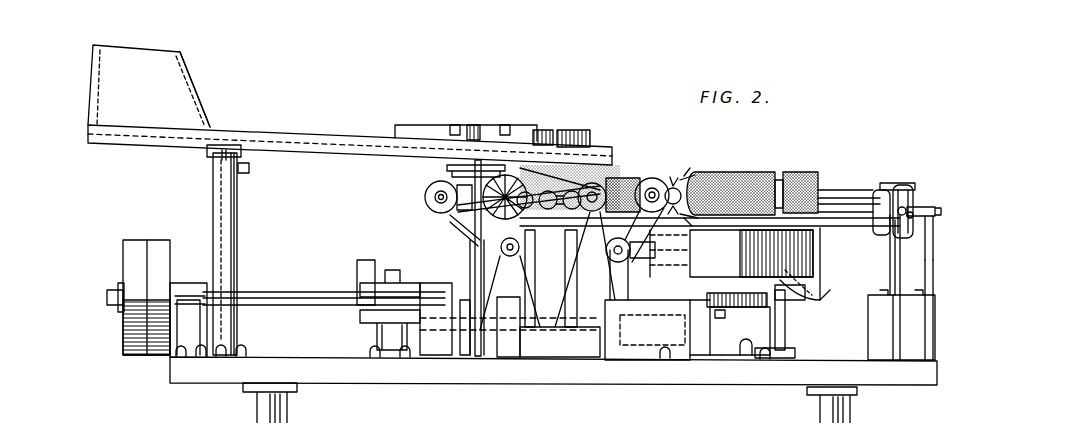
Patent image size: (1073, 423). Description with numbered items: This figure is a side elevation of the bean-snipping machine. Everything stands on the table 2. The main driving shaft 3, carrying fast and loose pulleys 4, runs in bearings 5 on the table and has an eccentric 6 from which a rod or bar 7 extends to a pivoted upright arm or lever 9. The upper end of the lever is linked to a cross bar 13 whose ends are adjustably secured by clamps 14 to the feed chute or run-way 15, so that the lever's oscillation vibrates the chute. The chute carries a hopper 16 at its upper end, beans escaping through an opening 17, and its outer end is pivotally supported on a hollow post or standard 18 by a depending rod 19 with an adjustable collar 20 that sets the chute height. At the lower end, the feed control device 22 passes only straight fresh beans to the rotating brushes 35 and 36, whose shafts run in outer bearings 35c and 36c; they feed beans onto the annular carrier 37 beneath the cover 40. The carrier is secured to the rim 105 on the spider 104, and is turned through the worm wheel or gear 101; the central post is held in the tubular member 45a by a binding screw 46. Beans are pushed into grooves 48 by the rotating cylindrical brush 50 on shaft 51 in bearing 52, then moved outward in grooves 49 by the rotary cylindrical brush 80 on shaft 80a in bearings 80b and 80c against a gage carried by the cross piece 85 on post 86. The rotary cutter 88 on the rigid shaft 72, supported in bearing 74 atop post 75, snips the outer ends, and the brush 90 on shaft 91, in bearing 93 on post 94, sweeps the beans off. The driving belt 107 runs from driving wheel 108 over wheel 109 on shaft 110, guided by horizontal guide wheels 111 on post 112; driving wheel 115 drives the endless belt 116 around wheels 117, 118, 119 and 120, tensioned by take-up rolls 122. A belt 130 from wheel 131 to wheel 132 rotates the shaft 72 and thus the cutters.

The table 2 is at (787, 379).
The main driving shaft 3 is at (266, 292).
The fast and loose pulleys 4 is at (125, 362).
The bearings 5 is at (190, 285).
The eccentric 6 is at (478, 350).
The rod or bar 7 is at (470, 330).
The pivoted upright arm or lever 9 is at (470, 300).
The cross bar 13 is at (480, 140).
The clamps 14 is at (516, 150).
The feed chute or run-way 15 is at (298, 137).
The hopper 16 is at (182, 73).
The opening 17 is at (215, 118).
The hollow post or standard 18 is at (240, 222).
The depending rod 19 is at (213, 160).
The adjustable collar 20 is at (215, 170).
The feed control device 22 is at (585, 150).
The rotating brush 35 is at (645, 178).
The bearing 35c is at (690, 112).
The rotating brush 36 is at (575, 185).
The bearing 36c is at (555, 165).
The annular moving part or carrier 37 is at (825, 245).
The cover 40 is at (818, 290).
The tubular member 45a is at (725, 355).
The binding screw 46 is at (725, 312).
The grooves 48 is at (833, 260).
The grooves 49 is at (890, 198).
The rotating cylindrical brush 50 is at (540, 170).
The shaft 51 is at (448, 172).
The bearing 52 is at (430, 212).
The rigid shaft 72 is at (840, 250).
The bearing 74 is at (935, 210).
The post 75 is at (930, 247).
The rotary cylindrical brush 80 is at (797, 172).
The shaft 80a is at (885, 190).
The bearing 80b is at (900, 195).
The bearing 80c is at (822, 305).
The cross piece 85 is at (748, 340).
The post or standard 86 is at (785, 342).
The rotary knife or cutter 88 is at (910, 255).
The rotatable cylindrical brush 90 is at (737, 170).
The shaft 91 is at (702, 180).
The bearing 93 is at (690, 178).
The post 94 is at (650, 300).
The worm wheel or gear 101 is at (731, 262).
The spider 104 is at (801, 308).
The rim 105 is at (900, 373).
The driving belt 107 is at (356, 310).
The driving wheel 108 is at (358, 275).
The wheel 109 is at (552, 357).
The shaft 110 is at (545, 357).
The horizontal guide wheels 111 is at (387, 330).
The post 112 is at (385, 262).
The driving wheel 115 is at (600, 357).
The endless belt 116 is at (445, 222).
The wheel 117 is at (680, 187).
The wheel 118 is at (640, 175).
The wheel 119 is at (570, 165).
The wheel 120 is at (425, 190).
The take-up rolls 122 is at (625, 358).
The belt 130 is at (905, 205).
The wheel 131 is at (915, 212).
The wheel 132 is at (940, 225).